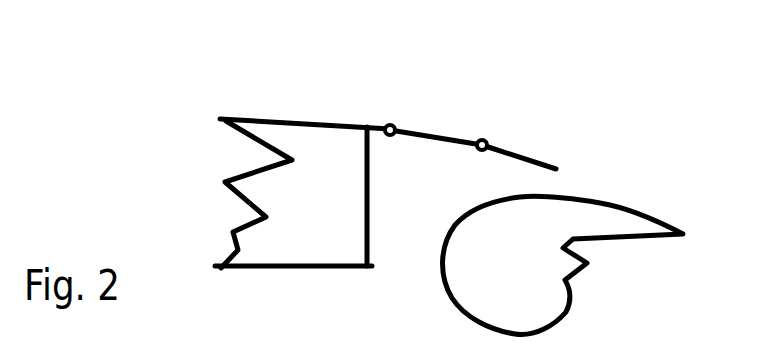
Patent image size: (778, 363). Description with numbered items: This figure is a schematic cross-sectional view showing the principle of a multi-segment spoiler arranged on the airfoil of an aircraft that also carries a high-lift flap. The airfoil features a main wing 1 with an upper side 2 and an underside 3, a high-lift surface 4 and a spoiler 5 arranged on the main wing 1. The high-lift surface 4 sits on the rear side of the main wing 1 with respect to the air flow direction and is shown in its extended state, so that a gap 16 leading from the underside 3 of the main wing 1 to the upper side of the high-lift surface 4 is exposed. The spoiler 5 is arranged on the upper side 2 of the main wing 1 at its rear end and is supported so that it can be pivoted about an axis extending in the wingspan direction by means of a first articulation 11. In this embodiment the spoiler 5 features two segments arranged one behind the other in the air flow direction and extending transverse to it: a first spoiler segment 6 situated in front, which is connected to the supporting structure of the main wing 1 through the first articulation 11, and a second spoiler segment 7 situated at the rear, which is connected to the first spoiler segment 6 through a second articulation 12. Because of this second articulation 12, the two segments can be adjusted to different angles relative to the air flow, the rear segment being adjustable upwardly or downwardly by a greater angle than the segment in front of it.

The main wing 1 is at (283, 192).
The upper side 2 is at (275, 120).
The underside 3 is at (268, 272).
The high-lift surface 4 is at (563, 223).
The spoiler 5 is at (486, 120).
The first spoiler segment 6 is at (438, 132).
The second spoiler segment 7 is at (555, 163).
The first articulation of the spoiler 11 is at (393, 124).
The second articulation of the spoiler 12 is at (486, 139).
The gap 16 is at (405, 251).